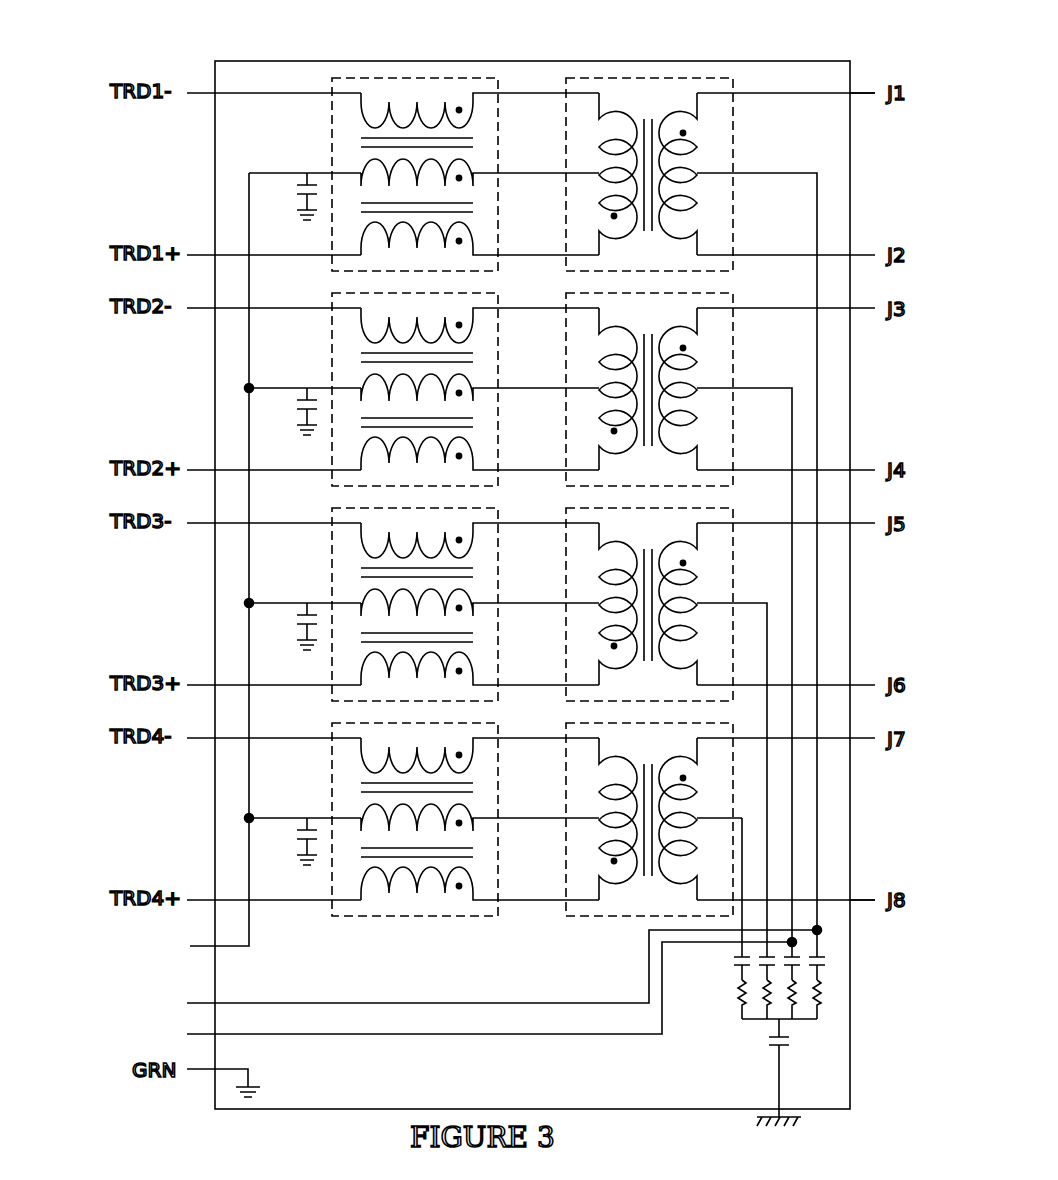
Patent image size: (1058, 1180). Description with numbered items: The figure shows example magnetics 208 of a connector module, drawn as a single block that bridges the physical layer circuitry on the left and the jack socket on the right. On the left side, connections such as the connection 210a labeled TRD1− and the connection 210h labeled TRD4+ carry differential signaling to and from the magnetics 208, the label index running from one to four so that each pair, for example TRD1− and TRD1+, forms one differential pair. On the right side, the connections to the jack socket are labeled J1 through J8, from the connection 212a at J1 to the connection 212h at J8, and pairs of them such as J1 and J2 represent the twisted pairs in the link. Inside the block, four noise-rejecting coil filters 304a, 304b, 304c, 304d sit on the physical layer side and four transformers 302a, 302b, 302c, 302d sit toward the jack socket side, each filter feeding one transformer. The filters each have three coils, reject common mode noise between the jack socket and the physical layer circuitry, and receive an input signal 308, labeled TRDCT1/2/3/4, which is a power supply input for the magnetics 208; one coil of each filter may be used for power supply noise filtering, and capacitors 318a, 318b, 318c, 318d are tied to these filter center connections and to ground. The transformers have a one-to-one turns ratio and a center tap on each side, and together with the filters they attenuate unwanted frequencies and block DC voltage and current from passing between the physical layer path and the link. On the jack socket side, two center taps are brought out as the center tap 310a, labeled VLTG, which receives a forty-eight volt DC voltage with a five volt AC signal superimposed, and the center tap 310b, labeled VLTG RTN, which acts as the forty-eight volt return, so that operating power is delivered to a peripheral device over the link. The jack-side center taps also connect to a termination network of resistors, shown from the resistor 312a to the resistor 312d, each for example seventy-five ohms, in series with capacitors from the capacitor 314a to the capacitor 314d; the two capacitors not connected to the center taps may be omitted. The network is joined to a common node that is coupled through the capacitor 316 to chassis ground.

The magnetics 208 is at (708, 61).
The connection 210a is at (145, 60).
The connection 210h is at (145, 875).
The connection 212a is at (896, 68).
The connection 212h is at (900, 875).
The transformer 302a is at (734, 240).
The transformer 302b is at (734, 377).
The transformer 302c is at (566, 623).
The transformer 302d is at (566, 838).
The noise-rejecting coil filter 304a is at (331, 158).
The noise-rejecting coil filter 304b is at (331, 373).
The noise-rejecting coil filter 304c is at (331, 590).
The noise-rejecting coil filter 304d is at (331, 805).
The input signal 308 is at (73, 928).
The center tap 310a is at (407, 1002).
The center tap 310b is at (407, 1034).
The resistor 312a is at (832, 995).
The resistor 312d is at (733, 1001).
The capacitor 314a is at (835, 966).
The capacitor 314d is at (726, 966).
The capacitor 316 is at (799, 1043).
The capacitor 318a is at (290, 201).
The capacitor 318b is at (290, 416).
The capacitor 318c is at (290, 626).
The capacitor 318d is at (290, 841).